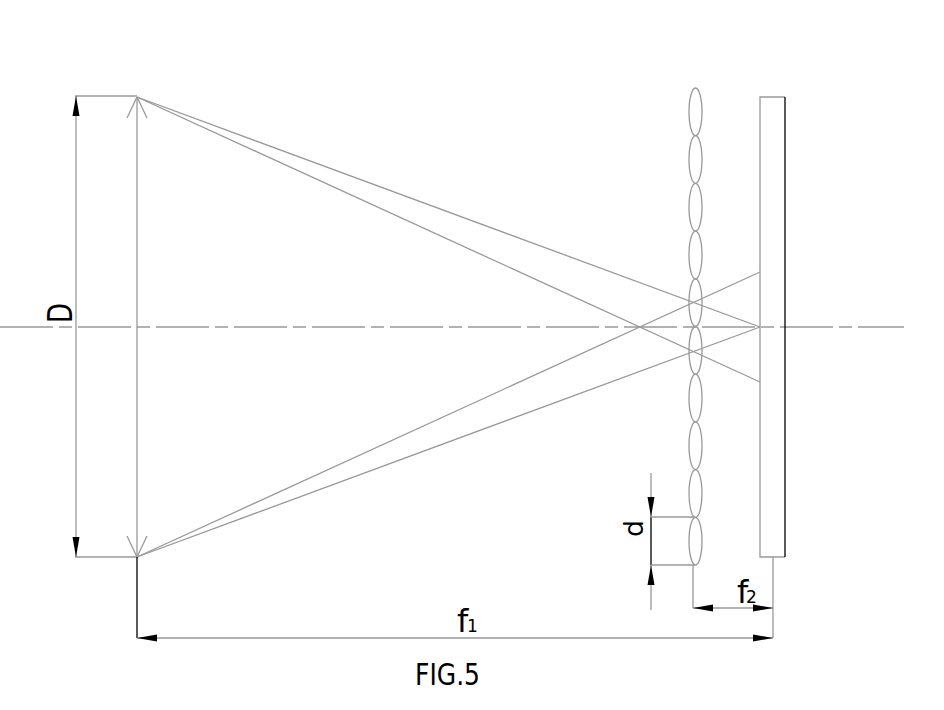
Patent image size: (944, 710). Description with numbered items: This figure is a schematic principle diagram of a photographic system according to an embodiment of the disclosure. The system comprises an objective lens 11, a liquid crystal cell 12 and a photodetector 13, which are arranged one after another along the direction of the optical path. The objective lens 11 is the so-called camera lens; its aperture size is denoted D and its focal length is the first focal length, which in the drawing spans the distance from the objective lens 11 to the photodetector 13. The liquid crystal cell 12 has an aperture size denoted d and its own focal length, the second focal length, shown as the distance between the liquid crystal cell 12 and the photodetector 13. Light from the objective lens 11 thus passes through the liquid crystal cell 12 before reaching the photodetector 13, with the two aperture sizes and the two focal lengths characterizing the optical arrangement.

The objective lens 11 is at (137, 133).
The liquid crystal cell 12 is at (696, 128).
The photodetector 13 is at (777, 120).